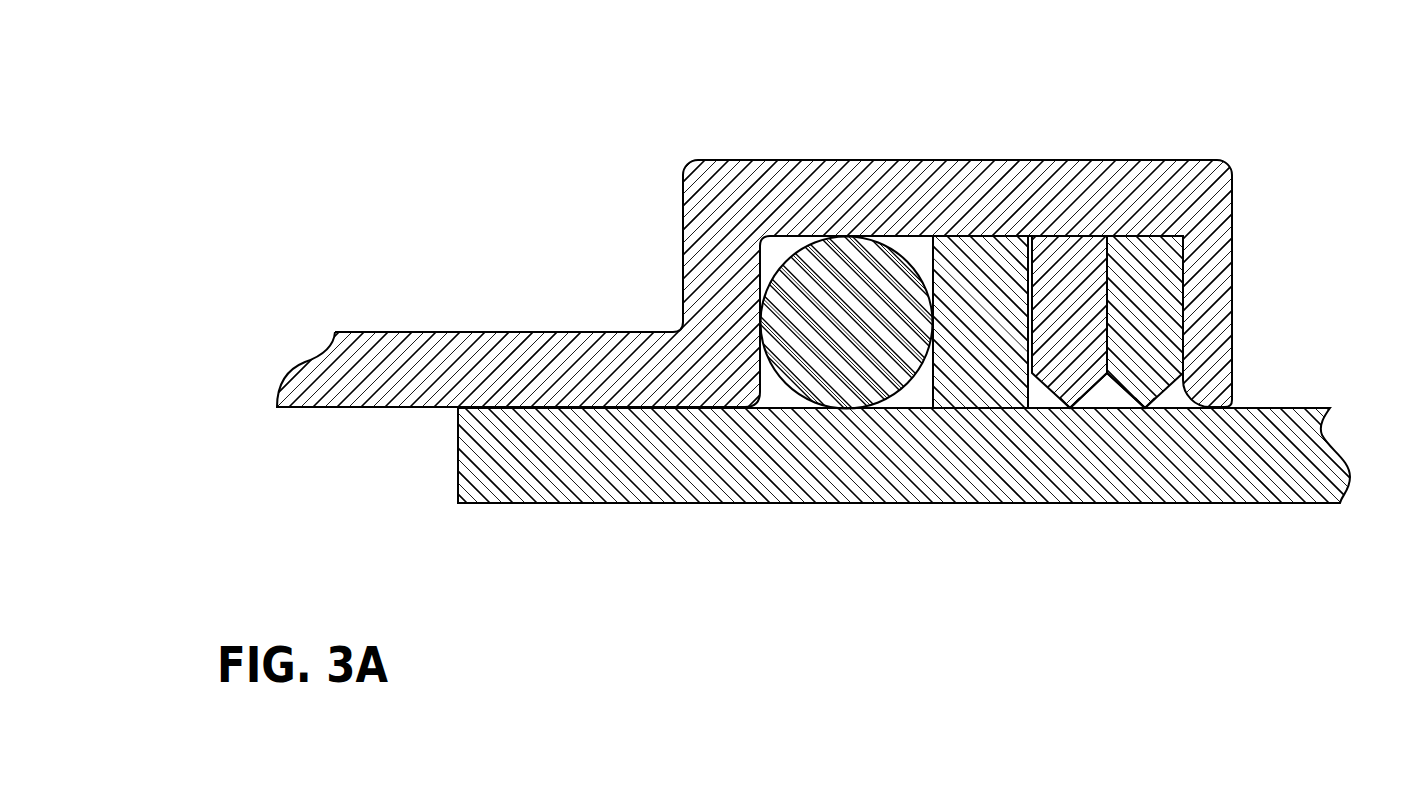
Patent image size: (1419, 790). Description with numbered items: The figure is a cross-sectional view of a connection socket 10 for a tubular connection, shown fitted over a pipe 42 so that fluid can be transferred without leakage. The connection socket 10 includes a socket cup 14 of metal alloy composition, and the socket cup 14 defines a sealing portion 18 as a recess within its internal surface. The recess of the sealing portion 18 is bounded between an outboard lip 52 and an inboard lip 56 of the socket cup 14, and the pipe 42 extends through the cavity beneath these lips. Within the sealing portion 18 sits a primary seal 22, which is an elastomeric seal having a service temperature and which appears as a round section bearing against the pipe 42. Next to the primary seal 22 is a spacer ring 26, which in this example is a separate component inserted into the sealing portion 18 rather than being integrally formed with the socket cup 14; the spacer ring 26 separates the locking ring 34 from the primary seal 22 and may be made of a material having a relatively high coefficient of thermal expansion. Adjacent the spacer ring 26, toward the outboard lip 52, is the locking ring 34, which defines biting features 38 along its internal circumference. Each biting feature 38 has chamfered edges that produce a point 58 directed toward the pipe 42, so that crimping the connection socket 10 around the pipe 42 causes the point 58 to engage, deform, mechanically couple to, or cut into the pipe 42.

The connection socket 10 is at (1257, 147).
The socket cup 14 is at (506, 328).
The sealing portion 18 is at (920, 190).
The primary seal 22 is at (848, 287).
The spacer ring 26 is at (985, 285).
The locking ring 34 is at (1075, 253).
The biting feature 38 is at (1101, 395).
The pipe 42 is at (1288, 443).
The outboard lip 52 is at (1207, 288).
The inboard lip 56 is at (703, 296).
The point 58 is at (1070, 409).